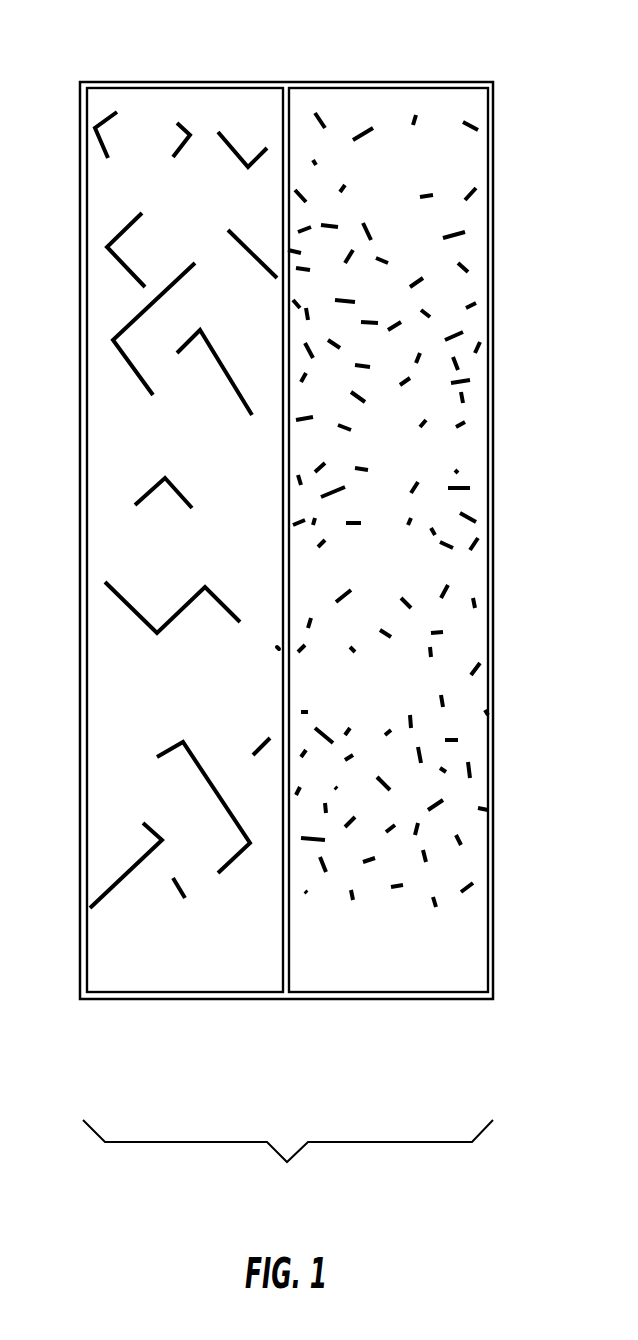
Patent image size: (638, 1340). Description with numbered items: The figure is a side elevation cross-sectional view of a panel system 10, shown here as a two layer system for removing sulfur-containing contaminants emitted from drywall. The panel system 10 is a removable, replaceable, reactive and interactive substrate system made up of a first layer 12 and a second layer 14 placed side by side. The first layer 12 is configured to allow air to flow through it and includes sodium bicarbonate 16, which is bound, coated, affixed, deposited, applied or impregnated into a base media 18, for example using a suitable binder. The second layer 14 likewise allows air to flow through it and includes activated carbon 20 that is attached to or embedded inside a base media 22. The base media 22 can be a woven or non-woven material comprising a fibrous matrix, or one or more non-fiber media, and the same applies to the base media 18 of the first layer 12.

The panel system 10 is at (286, 643).
The first layer 12 is at (180, 999).
The second layer 14 is at (392, 999).
The sodium bicarbonate 16 is at (165, 290).
The base media 18 is at (206, 207).
The activated carbon 20 is at (450, 233).
The base media 22 is at (388, 207).